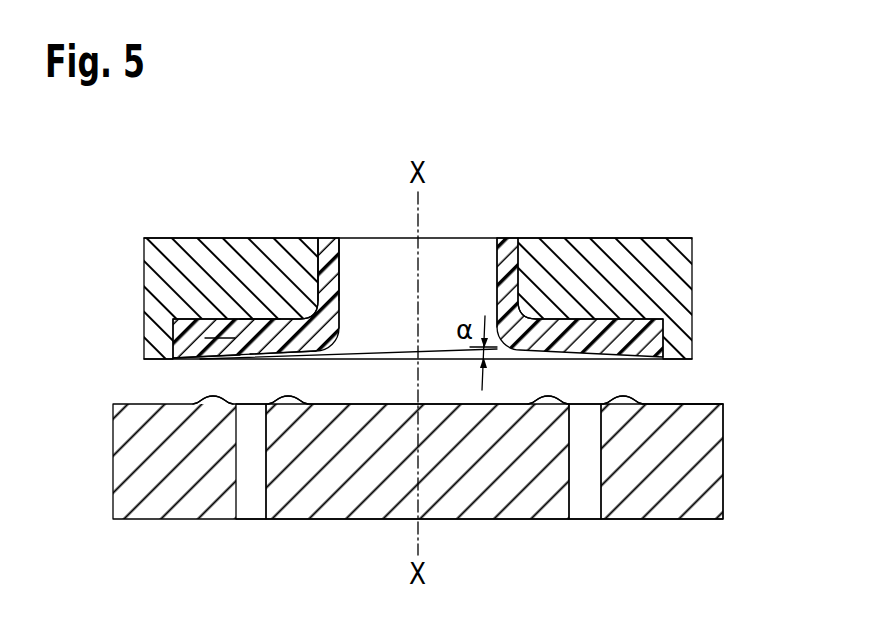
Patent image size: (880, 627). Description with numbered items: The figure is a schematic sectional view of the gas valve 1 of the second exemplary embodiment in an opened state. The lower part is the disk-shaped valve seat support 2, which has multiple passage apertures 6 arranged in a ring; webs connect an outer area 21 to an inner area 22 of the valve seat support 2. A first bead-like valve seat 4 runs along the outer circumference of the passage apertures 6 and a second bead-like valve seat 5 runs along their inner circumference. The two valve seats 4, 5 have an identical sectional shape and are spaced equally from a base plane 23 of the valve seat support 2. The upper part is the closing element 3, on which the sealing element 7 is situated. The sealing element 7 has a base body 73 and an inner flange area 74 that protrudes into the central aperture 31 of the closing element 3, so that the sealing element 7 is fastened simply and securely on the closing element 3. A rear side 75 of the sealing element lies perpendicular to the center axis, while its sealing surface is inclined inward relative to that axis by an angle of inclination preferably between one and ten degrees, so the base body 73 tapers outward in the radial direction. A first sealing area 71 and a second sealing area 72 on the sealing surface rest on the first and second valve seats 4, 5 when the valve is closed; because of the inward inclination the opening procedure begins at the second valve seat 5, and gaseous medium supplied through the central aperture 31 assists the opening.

The gas valve 1 is at (128, 211).
The valve seat support 2 is at (97, 491).
The closing element 3 is at (160, 281).
The first bead-like valve seat 4 is at (212, 404).
The second bead-like valve seat 5 is at (288, 404).
The passage apertures 6 is at (249, 507).
The sealing element 7 is at (163, 339).
The outer area 21 is at (670, 506).
The inner area 22 is at (490, 506).
The base plane 23 is at (673, 385).
The central aperture 31 is at (452, 253).
The first sealing area 71 is at (209, 359).
The second sealing area 72 is at (289, 357).
The base body 73 is at (220, 334).
The inner flange area 74 is at (330, 258).
The rear side 75 is at (258, 319).